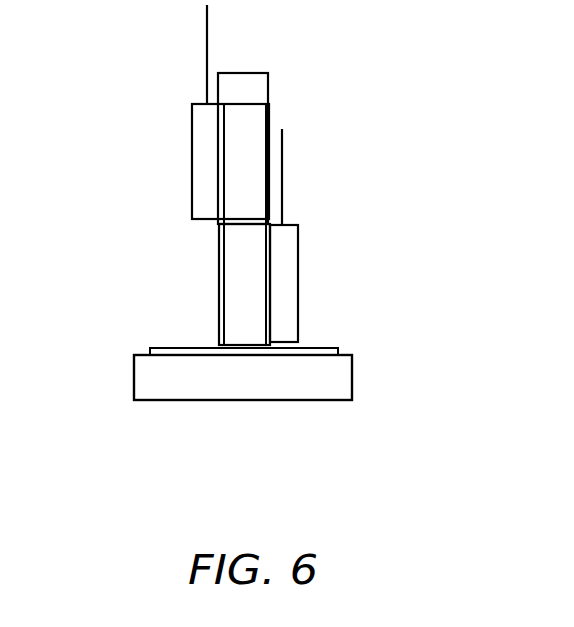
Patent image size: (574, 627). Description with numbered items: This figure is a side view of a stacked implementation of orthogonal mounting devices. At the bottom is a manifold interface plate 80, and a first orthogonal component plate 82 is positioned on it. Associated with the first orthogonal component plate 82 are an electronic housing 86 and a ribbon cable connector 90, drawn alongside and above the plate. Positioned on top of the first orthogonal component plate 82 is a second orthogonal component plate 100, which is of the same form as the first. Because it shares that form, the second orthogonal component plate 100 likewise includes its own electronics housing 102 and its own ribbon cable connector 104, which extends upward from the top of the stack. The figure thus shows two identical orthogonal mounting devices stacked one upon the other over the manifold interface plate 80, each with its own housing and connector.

The manifold interface plate 80 is at (343, 377).
The first orthogonal component plate 82 is at (237, 277).
The electronic housing 86 is at (292, 275).
The ribbon cable connector 90 is at (282, 177).
The second orthogonal component plate 100 is at (306, 148).
The electronics housing 102 is at (202, 162).
The ribbon cable connector 104 is at (207, 50).